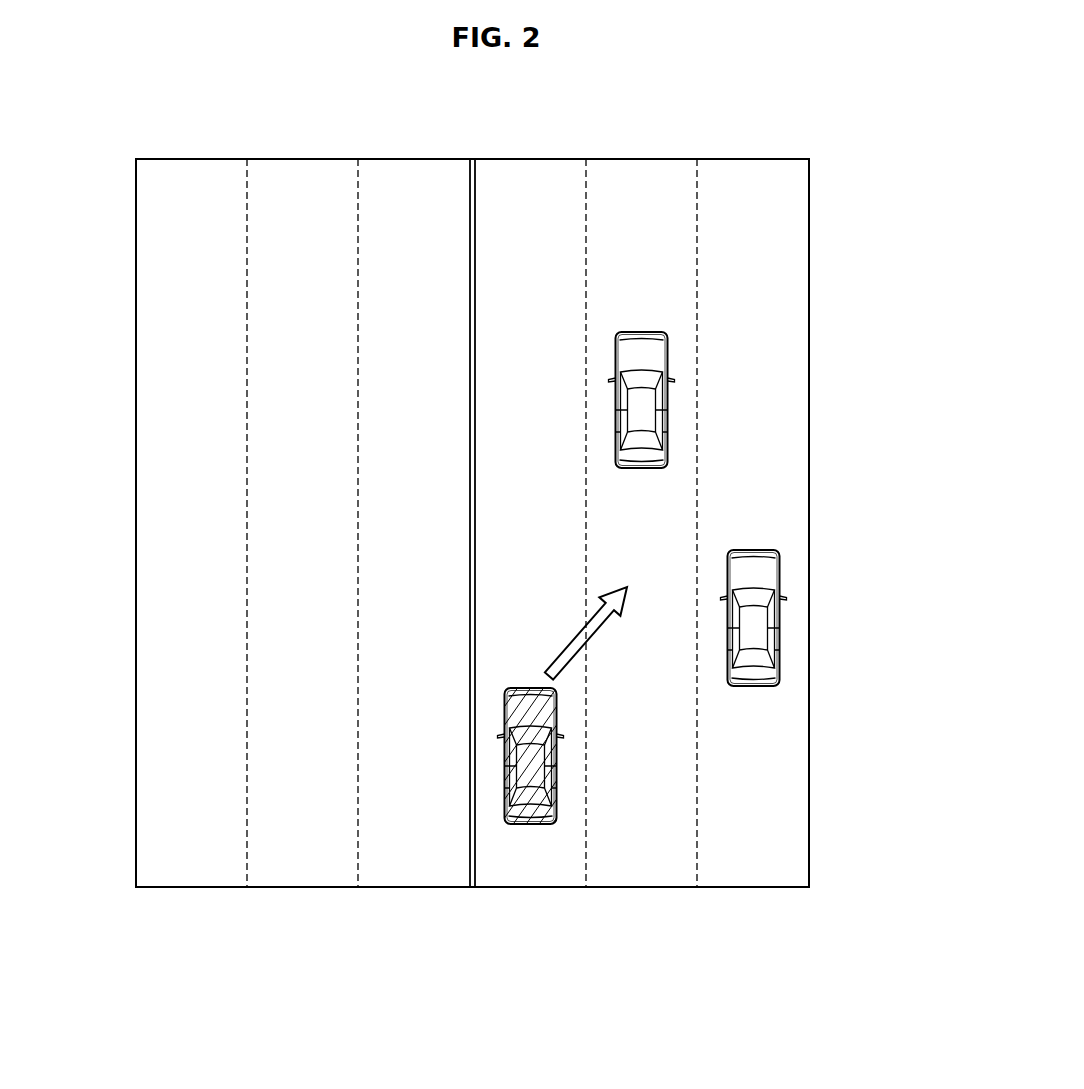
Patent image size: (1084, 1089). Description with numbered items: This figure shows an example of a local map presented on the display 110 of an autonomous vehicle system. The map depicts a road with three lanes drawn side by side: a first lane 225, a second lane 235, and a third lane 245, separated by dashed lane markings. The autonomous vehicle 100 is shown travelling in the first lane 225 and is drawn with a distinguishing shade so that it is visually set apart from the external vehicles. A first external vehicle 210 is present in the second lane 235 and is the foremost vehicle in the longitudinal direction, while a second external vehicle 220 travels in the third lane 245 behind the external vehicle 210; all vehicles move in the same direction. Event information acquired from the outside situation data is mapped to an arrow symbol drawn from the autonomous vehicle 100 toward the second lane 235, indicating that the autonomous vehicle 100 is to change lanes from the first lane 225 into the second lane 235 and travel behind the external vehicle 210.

The display 110 is at (809, 159).
The autonomous vehicle 100 is at (531, 826).
The external vehicle 210 is at (641, 332).
The external vehicle 220 is at (751, 550).
The first lane 225 is at (572, 867).
The second lane 235 is at (643, 867).
The third lane 245 is at (755, 867).